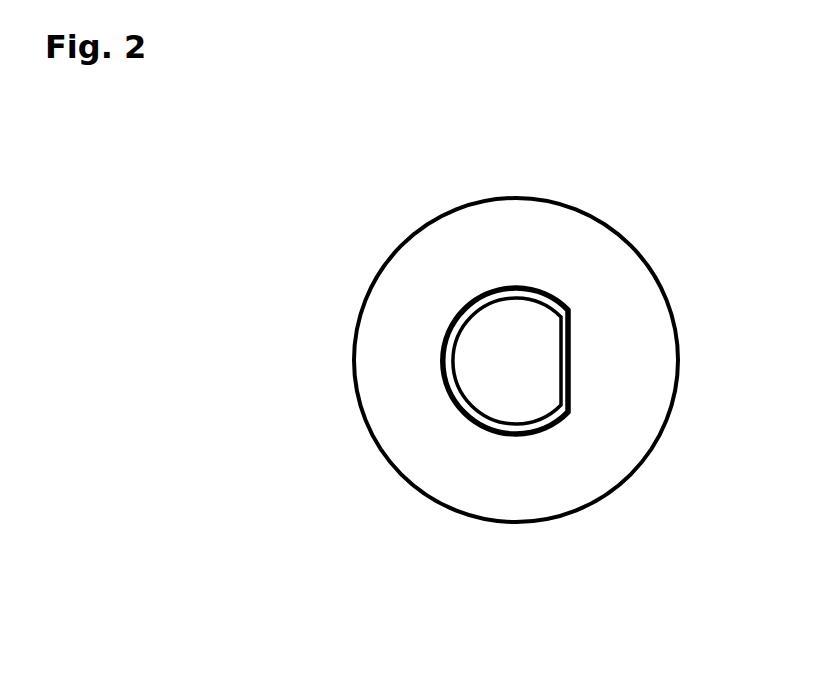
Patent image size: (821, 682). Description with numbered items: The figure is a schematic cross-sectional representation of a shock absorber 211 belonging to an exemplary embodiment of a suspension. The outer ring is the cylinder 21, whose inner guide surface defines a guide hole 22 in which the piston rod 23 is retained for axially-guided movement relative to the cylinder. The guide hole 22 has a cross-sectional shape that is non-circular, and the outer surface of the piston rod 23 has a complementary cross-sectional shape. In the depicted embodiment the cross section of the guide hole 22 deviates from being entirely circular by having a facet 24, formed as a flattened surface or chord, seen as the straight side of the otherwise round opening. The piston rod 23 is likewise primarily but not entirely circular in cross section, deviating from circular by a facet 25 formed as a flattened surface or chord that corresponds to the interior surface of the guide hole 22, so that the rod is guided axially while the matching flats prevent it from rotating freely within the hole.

The cylinder 21 is at (625, 400).
The shock absorber 211 is at (538, 200).
The guide hole 22 is at (517, 436).
The piston rod 23 is at (477, 360).
The facet 24 is at (560, 330).
The facet 25 is at (569, 359).